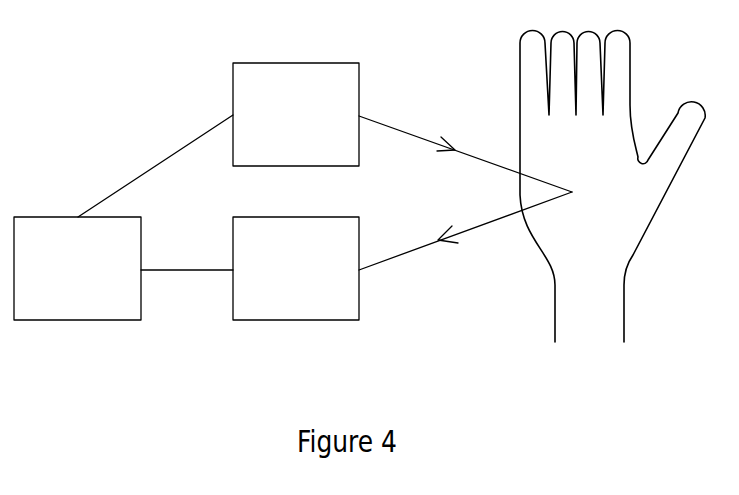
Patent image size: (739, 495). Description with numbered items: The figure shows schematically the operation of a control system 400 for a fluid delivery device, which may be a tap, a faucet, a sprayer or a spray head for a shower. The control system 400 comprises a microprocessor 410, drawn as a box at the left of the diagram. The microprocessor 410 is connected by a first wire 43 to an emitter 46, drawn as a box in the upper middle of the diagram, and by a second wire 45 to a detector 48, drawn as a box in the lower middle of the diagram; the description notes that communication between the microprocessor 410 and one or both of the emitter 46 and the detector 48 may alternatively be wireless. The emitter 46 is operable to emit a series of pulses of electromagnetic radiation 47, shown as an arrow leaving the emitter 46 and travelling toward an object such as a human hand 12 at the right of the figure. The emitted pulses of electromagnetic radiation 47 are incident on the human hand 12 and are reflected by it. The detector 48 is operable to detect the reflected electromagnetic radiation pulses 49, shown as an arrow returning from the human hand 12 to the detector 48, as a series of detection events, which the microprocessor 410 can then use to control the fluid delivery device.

The control system 400 is at (146, 122).
The microprocessor 410 is at (77, 300).
The first wire 43 is at (141, 176).
The second wire 45 is at (188, 270).
The emitter 46 is at (295, 91).
The pulses of electromagnetic radiation 47 is at (416, 135).
The detector 48 is at (295, 300).
The reflected electromagnetic radiation pulses 49 is at (422, 247).
The human hand 12 is at (618, 106).